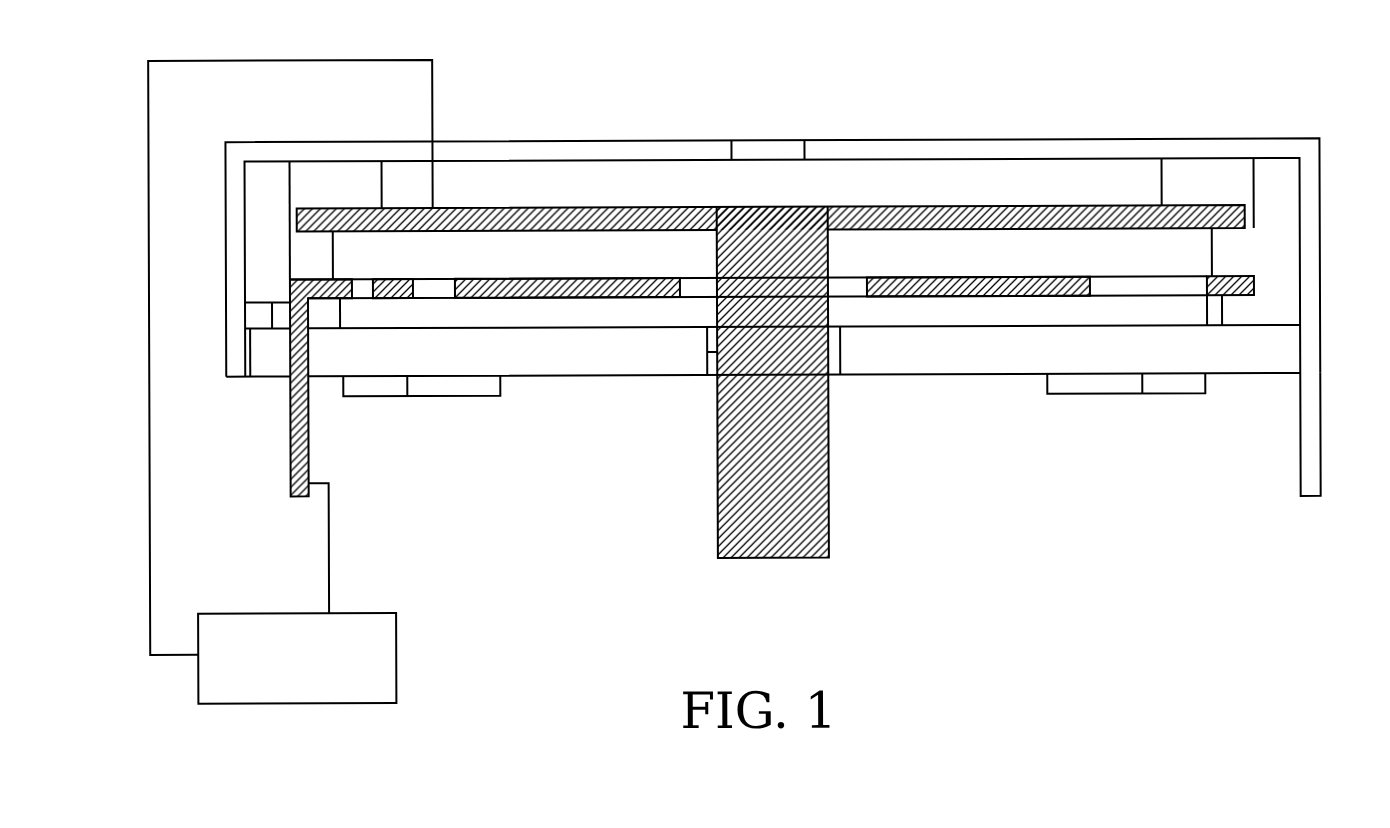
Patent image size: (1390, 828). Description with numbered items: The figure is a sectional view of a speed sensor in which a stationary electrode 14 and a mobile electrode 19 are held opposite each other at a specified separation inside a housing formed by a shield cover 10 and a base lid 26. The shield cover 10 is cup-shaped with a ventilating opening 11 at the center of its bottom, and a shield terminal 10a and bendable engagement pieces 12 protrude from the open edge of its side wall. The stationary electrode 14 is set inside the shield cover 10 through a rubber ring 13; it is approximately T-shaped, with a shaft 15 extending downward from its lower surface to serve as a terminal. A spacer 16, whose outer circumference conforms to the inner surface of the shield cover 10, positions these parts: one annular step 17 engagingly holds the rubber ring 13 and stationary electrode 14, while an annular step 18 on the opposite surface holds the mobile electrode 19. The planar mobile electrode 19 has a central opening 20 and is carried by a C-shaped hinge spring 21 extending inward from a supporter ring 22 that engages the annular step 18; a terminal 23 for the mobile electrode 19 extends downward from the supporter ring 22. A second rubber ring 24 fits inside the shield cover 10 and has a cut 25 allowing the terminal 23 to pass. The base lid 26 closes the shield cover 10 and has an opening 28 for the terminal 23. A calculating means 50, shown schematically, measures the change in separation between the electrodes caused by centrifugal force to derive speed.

The shield cover 10 is at (1032, 150).
The shield terminal 10a is at (1303, 497).
The ventilating opening 11 is at (775, 150).
The bendable engagement pieces 12 is at (447, 388).
The rubber ring 13 is at (350, 176).
The stationary electrode 14 is at (940, 205).
The shaft 15 is at (773, 548).
The spacer 16 is at (268, 182).
The annular step 17 is at (1232, 230).
The annular step 18 is at (1242, 270).
The mobile electrode 19 is at (940, 300).
The opening 20 is at (717, 377).
The hinge spring 21 is at (380, 300).
The supporter ring 22 is at (1222, 300).
The terminal 23 is at (295, 495).
The rubber ring 24 is at (575, 312).
The cut 25 is at (278, 318).
The base lid 26 is at (1013, 350).
The opening 28 is at (265, 365).
The calculating means 50 is at (395, 653).